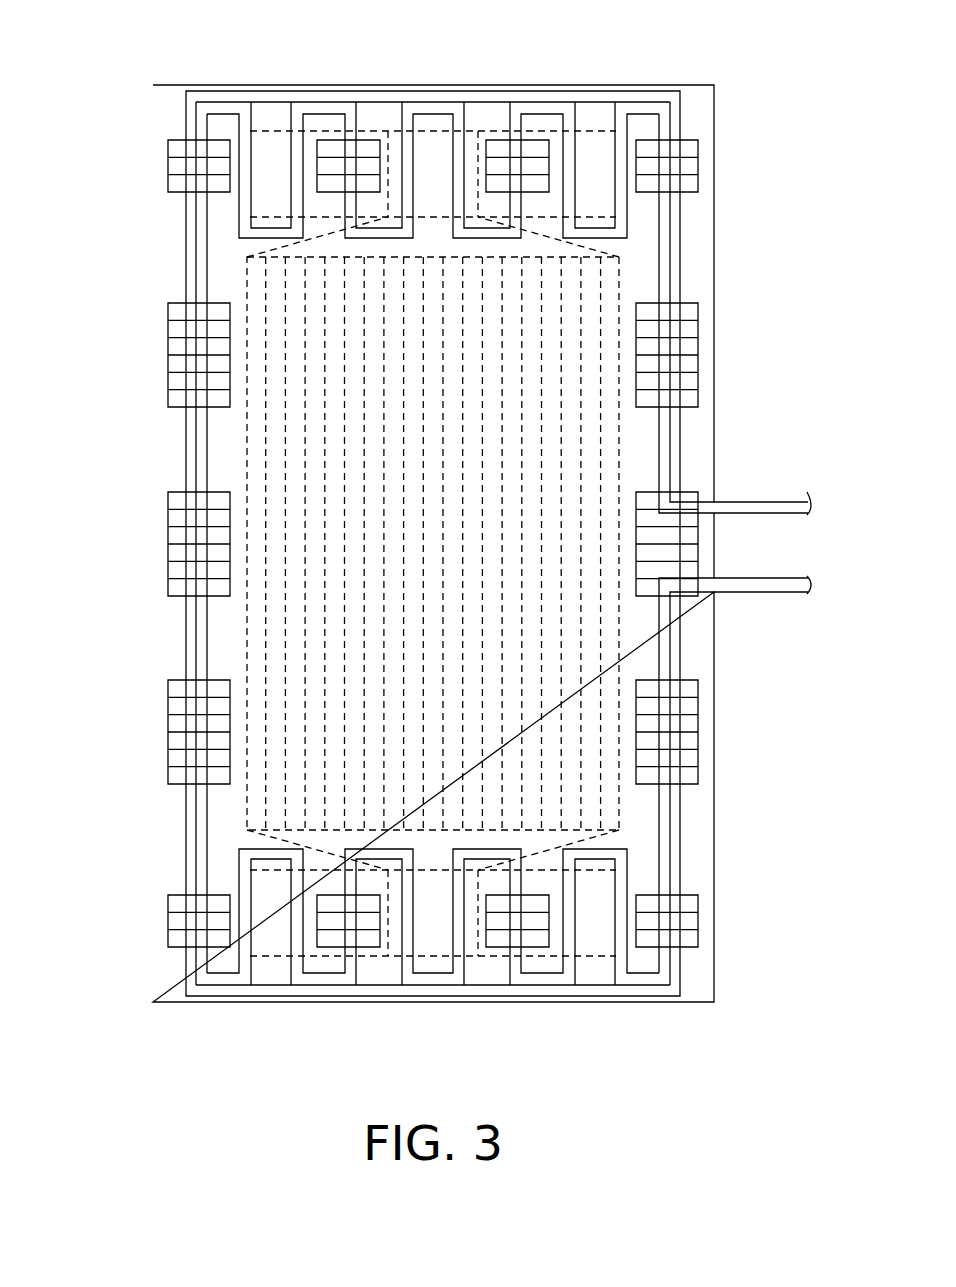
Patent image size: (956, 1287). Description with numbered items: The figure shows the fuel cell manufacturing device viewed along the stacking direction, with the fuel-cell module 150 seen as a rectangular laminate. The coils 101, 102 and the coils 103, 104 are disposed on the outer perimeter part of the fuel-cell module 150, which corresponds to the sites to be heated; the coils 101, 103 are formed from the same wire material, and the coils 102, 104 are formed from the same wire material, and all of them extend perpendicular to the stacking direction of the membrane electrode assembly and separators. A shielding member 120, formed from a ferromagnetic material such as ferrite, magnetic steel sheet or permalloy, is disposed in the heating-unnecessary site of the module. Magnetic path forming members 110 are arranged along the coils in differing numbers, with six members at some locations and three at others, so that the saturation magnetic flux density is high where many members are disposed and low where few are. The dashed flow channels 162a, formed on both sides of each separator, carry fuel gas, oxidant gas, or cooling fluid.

The fuel-cell module 150 is at (177, 82).
The shielding member 120 is at (184, 229).
The coil 101 is at (201, 838).
The coil 102 is at (433, 543).
The coil 103 is at (667, 845).
The coil 104 is at (733, 543).
The magnetic path forming member 110 is at (368, 186).
The flow channel 162a is at (565, 318).